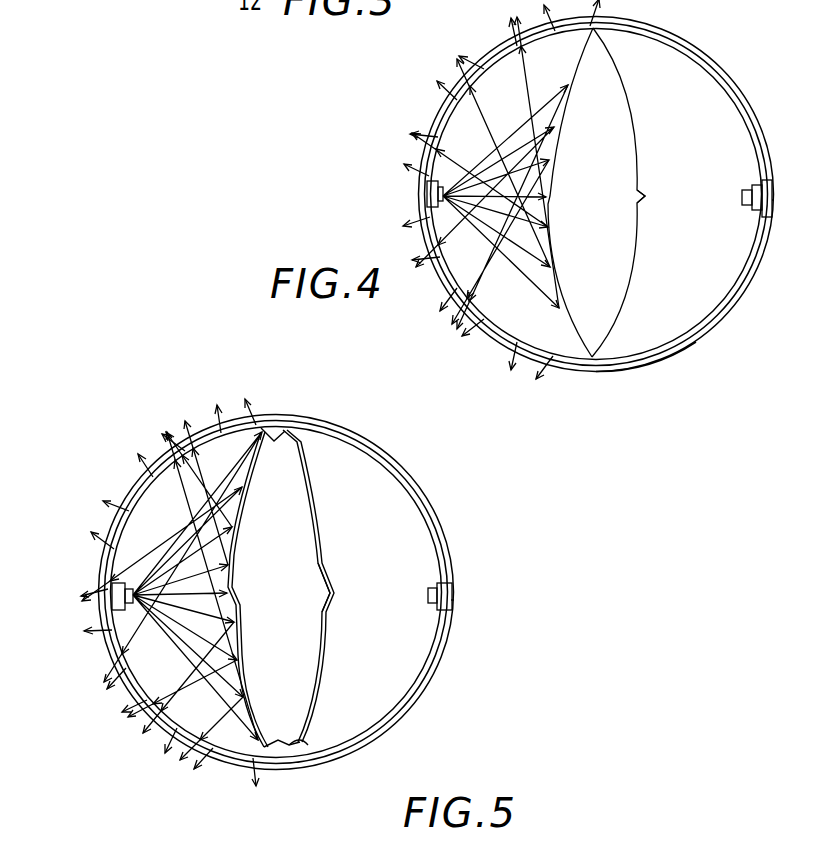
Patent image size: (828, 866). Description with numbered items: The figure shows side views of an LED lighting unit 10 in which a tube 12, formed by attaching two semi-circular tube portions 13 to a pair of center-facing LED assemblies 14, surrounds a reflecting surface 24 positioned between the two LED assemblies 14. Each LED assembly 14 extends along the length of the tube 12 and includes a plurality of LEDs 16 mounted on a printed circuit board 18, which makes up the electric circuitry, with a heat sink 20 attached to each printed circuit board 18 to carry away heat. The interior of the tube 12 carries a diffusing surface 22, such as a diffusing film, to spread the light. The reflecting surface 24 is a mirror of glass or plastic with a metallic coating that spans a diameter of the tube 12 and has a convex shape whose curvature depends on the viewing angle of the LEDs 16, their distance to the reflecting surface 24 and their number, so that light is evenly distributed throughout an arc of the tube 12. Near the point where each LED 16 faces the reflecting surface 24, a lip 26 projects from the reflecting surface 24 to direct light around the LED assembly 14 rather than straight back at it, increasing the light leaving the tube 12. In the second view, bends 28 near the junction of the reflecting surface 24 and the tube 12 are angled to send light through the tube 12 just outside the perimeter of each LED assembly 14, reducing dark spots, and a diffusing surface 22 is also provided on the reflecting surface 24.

In FIG. 4, the LED lighting unit 10 is at (412, 104).
In FIG. 5, the LED lighting unit 10 is at (200, 396).
In FIG. 4, the tube 12 is at (501, 189).
In FIG. 5, the tube 12 is at (116, 695).
In FIG. 4, the semi-circular tube portions 13 is at (690, 46).
In FIG. 4, the LED assembly 14 is at (408, 192).
In FIG. 5, the LED assembly 14 is at (84, 598).
In FIG. 4, the LED 16 is at (745, 193).
In FIG. 5, the LED 16 is at (432, 593).
In FIG. 4, the printed circuit board 18 is at (757, 210).
In FIG. 5, the printed circuit board 18 is at (452, 590).
In FIG. 4, the heat sink 20 is at (773, 203).
In FIG. 5, the heat sink 20 is at (452, 607).
In FIG. 4, the diffusing surface 22 is at (664, 348).
In FIG. 5, the diffusing surface 22 is at (324, 500).
In FIG. 4, the reflecting surface 24 is at (636, 84).
In FIG. 5, the reflecting surface 24 is at (322, 673).
In FIG. 4, the lip 26 is at (639, 195).
In FIG. 5, the lip 26 is at (336, 594).
In FIG. 5, the bend 28 is at (332, 750).